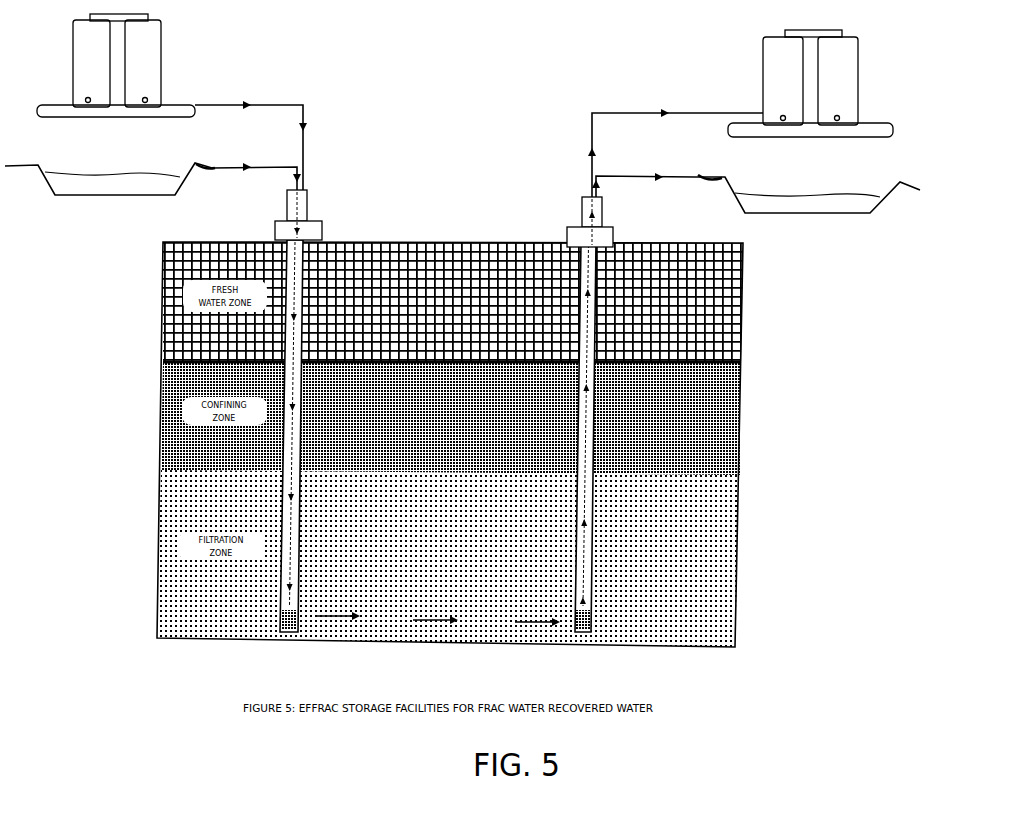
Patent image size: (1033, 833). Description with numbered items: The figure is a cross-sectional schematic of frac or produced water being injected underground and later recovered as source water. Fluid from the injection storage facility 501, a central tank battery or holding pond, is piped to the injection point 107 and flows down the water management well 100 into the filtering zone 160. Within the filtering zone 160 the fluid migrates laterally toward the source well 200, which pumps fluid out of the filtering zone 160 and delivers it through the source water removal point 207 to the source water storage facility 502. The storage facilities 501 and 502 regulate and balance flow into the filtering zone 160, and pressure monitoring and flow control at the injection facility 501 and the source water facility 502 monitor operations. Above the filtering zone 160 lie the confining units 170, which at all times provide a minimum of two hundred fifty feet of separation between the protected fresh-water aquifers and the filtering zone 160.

The storage facility 501 is at (156, 104).
The storage facility 502 is at (754, 121).
The injection point 107 is at (322, 190).
The source water removal point 207 is at (566, 190).
The water management well 100 is at (268, 380).
The source well 200 is at (612, 441).
The confining units 170 is at (451, 418).
The filtering zone 160 is at (448, 558).